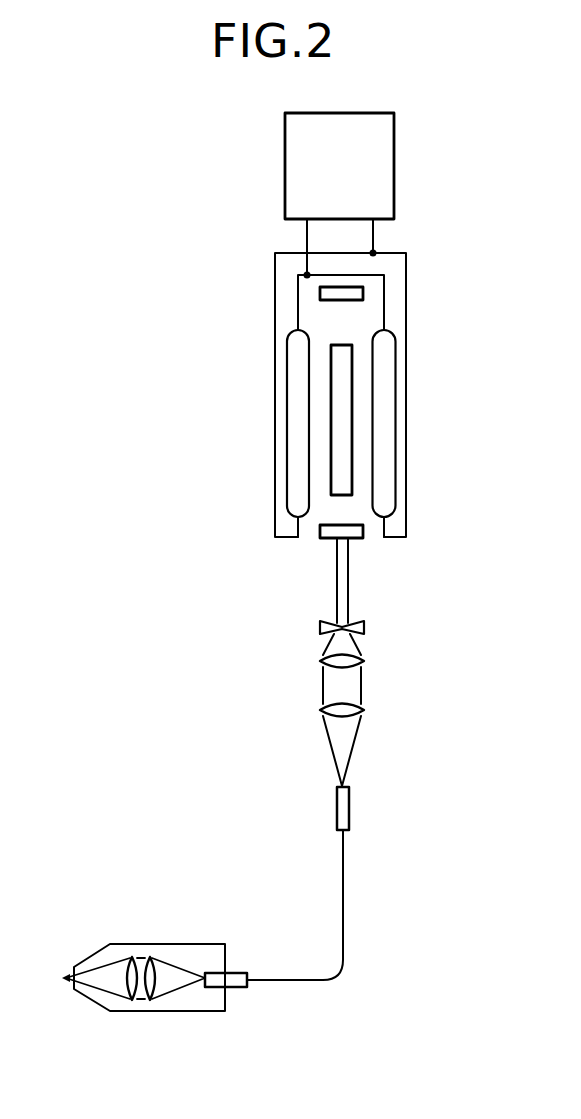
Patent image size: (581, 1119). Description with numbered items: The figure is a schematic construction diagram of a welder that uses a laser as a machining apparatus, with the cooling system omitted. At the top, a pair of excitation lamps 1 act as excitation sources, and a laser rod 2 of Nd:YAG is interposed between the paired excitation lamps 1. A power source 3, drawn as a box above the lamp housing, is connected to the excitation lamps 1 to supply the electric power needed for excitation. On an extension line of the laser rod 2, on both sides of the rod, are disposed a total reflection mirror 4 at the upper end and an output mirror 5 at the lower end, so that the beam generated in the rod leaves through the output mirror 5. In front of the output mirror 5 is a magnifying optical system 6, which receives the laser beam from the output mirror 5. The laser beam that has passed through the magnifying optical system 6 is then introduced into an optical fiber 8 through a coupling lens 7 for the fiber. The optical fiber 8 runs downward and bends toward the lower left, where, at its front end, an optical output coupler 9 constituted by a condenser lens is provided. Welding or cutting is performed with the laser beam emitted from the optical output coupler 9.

The excitation lamps 1 is at (287, 435).
The laser rod 2 is at (343, 398).
The power source 3 is at (394, 165).
The total reflection mirror 4 is at (363, 290).
The output mirror 5 is at (363, 540).
The magnifying optical system 6 is at (364, 627).
The coupling lens 7 is at (364, 710).
The optical fiber 8 is at (343, 943).
The optical output coupler 9 is at (205, 1011).